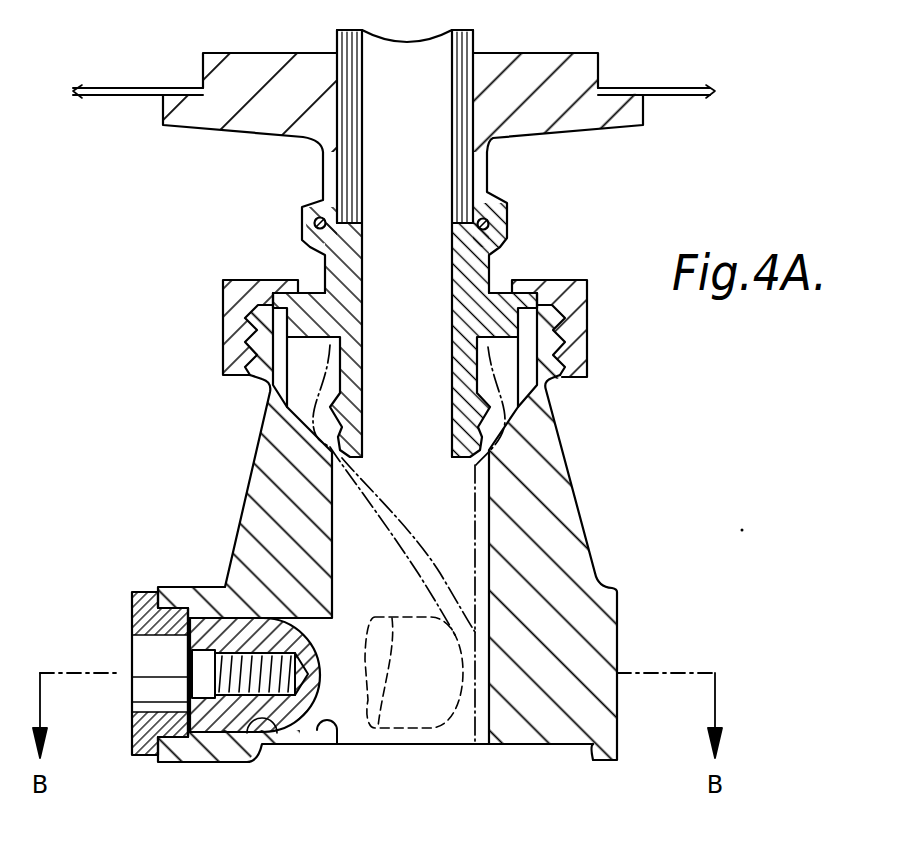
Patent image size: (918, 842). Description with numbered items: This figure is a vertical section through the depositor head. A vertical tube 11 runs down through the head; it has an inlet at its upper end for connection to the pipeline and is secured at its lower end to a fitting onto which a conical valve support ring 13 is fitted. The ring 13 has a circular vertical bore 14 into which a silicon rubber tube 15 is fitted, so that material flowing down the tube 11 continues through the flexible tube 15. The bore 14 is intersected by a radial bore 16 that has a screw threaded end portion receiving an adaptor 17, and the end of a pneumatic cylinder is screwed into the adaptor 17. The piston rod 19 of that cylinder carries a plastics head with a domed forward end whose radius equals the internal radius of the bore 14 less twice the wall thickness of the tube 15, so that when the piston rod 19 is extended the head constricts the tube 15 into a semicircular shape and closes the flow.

The vertical tube 11 is at (348, 165).
The conical valve support ring 13 is at (575, 483).
The circular vertical bore 14 is at (332, 538).
The silicon rubber tube 15 is at (478, 558).
The radial bore 16 is at (317, 731).
The adaptor 17 is at (140, 600).
The piston rod 19 is at (270, 690).